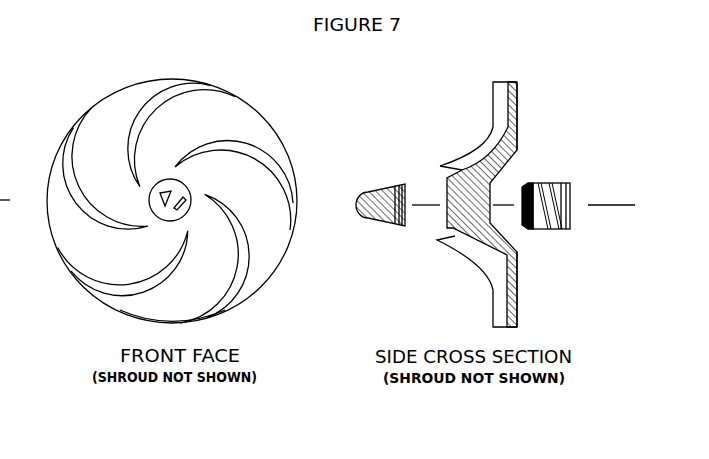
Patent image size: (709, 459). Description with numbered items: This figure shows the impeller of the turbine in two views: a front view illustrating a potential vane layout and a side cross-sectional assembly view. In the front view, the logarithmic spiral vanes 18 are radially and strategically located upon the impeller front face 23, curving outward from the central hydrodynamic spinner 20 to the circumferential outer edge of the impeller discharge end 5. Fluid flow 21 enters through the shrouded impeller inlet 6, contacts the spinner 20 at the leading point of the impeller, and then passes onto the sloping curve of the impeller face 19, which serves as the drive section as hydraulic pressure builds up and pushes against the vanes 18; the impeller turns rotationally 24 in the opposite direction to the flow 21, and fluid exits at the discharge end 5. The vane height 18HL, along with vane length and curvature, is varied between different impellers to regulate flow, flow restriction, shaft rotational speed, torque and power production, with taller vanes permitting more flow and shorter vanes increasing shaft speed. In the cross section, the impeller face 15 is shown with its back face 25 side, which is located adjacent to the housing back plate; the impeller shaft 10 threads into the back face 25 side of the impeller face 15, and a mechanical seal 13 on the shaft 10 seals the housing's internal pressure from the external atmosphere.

The impeller discharge end 5 is at (73, 252).
The impeller inlet 6 is at (450, 173).
The impeller shaft 10 is at (524, 197).
The mechanical seal 13 is at (560, 181).
The impeller face 15 is at (526, 289).
The vanes 18 is at (245, 142).
The vane height 18HL is at (243, 263).
The impeller face sloping curve 19 is at (242, 182).
The spinner 20 is at (163, 198).
The fluid flow 21 is at (169, 66).
The impeller front face 23 is at (172, 325).
The rotational direction 24 is at (167, 48).
The impeller back face 25 is at (517, 108).